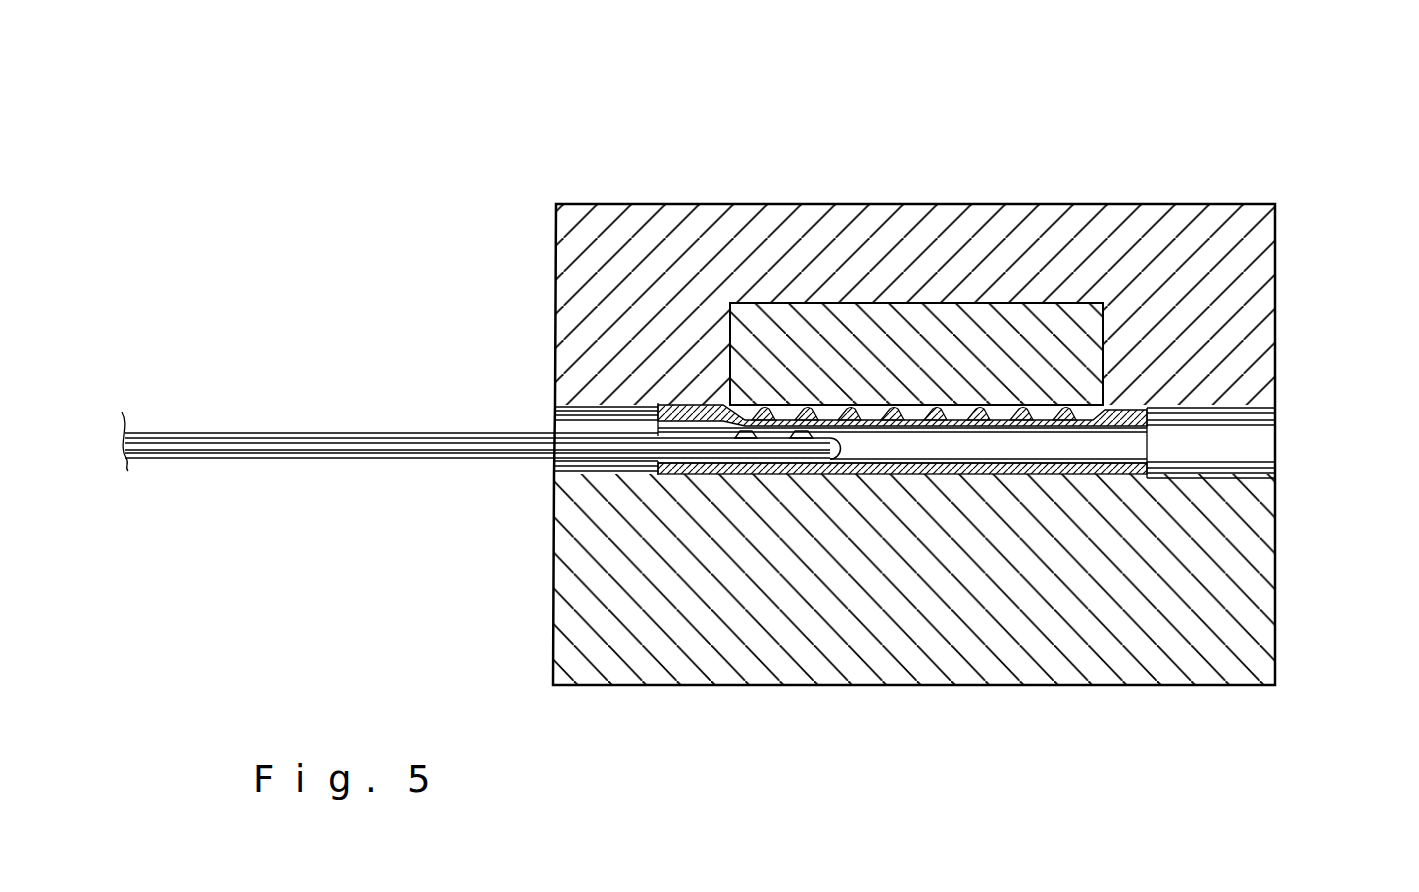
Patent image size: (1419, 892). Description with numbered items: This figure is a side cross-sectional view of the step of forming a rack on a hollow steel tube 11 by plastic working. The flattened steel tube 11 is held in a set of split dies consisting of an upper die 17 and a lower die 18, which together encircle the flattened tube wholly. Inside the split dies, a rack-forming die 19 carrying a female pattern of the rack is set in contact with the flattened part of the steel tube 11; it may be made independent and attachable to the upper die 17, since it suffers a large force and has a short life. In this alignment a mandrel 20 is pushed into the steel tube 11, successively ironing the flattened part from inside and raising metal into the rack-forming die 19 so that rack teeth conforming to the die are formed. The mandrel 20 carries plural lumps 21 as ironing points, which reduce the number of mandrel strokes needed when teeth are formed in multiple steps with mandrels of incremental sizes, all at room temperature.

The steel tube 11 is at (1130, 480).
The upper die 17 is at (635, 220).
The split die 18 is at (1128, 653).
The rack-forming die 19 is at (1050, 313).
The mandrel 20 is at (272, 432).
The lumps 21 is at (800, 438).